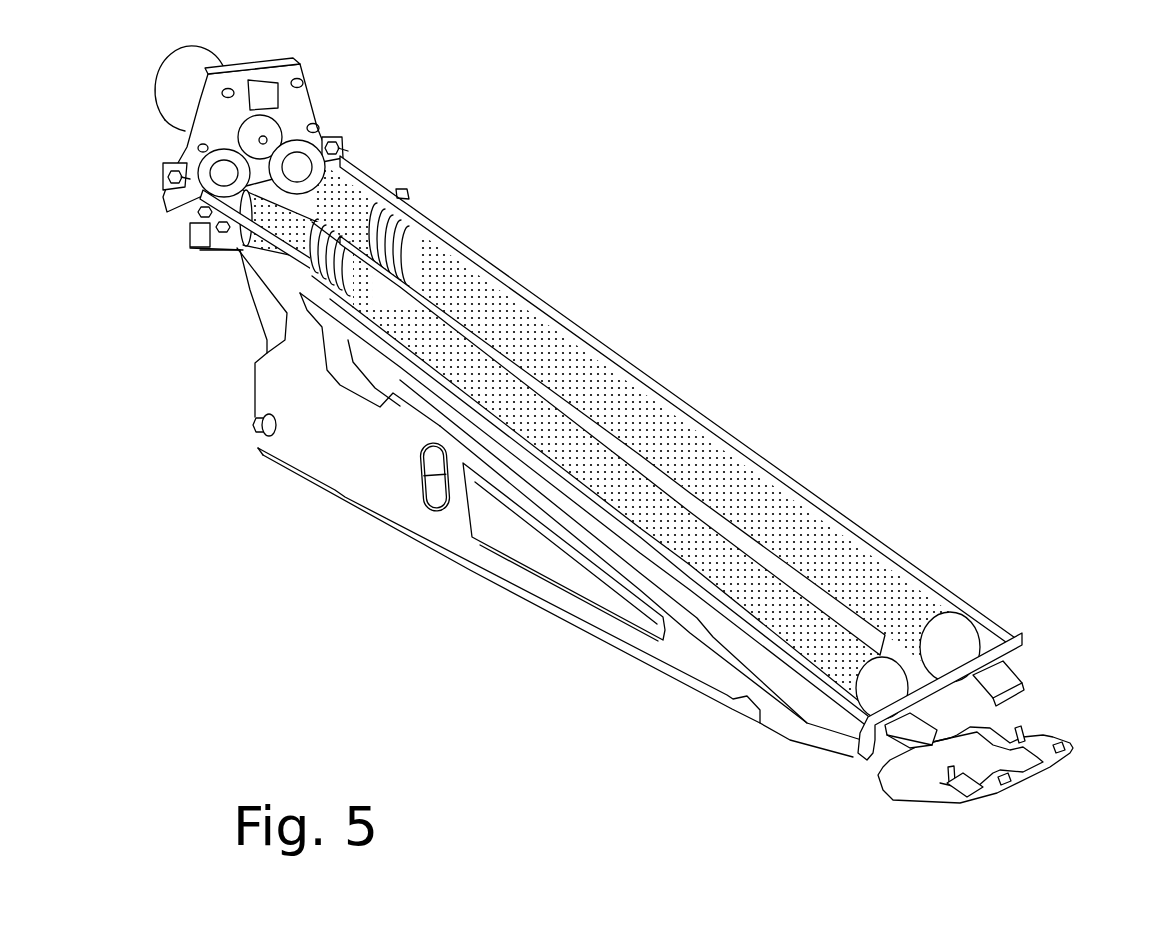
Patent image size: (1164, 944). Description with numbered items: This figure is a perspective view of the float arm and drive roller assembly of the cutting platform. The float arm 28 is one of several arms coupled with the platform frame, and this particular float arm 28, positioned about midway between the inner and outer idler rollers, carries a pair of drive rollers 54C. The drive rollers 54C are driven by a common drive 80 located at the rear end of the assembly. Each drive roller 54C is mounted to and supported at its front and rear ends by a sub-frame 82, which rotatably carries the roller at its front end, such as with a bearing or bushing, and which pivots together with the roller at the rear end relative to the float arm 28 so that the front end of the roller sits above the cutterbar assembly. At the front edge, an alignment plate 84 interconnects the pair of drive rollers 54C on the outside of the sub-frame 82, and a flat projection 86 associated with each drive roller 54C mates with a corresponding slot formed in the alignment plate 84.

The float arm 28 is at (430, 560).
The drive rollers 54C is at (530, 425).
The common drive 80 is at (311, 97).
The sub-frame 82 is at (287, 273).
The alignment plate 84 is at (1030, 637).
The flat projection 86 is at (1023, 694).